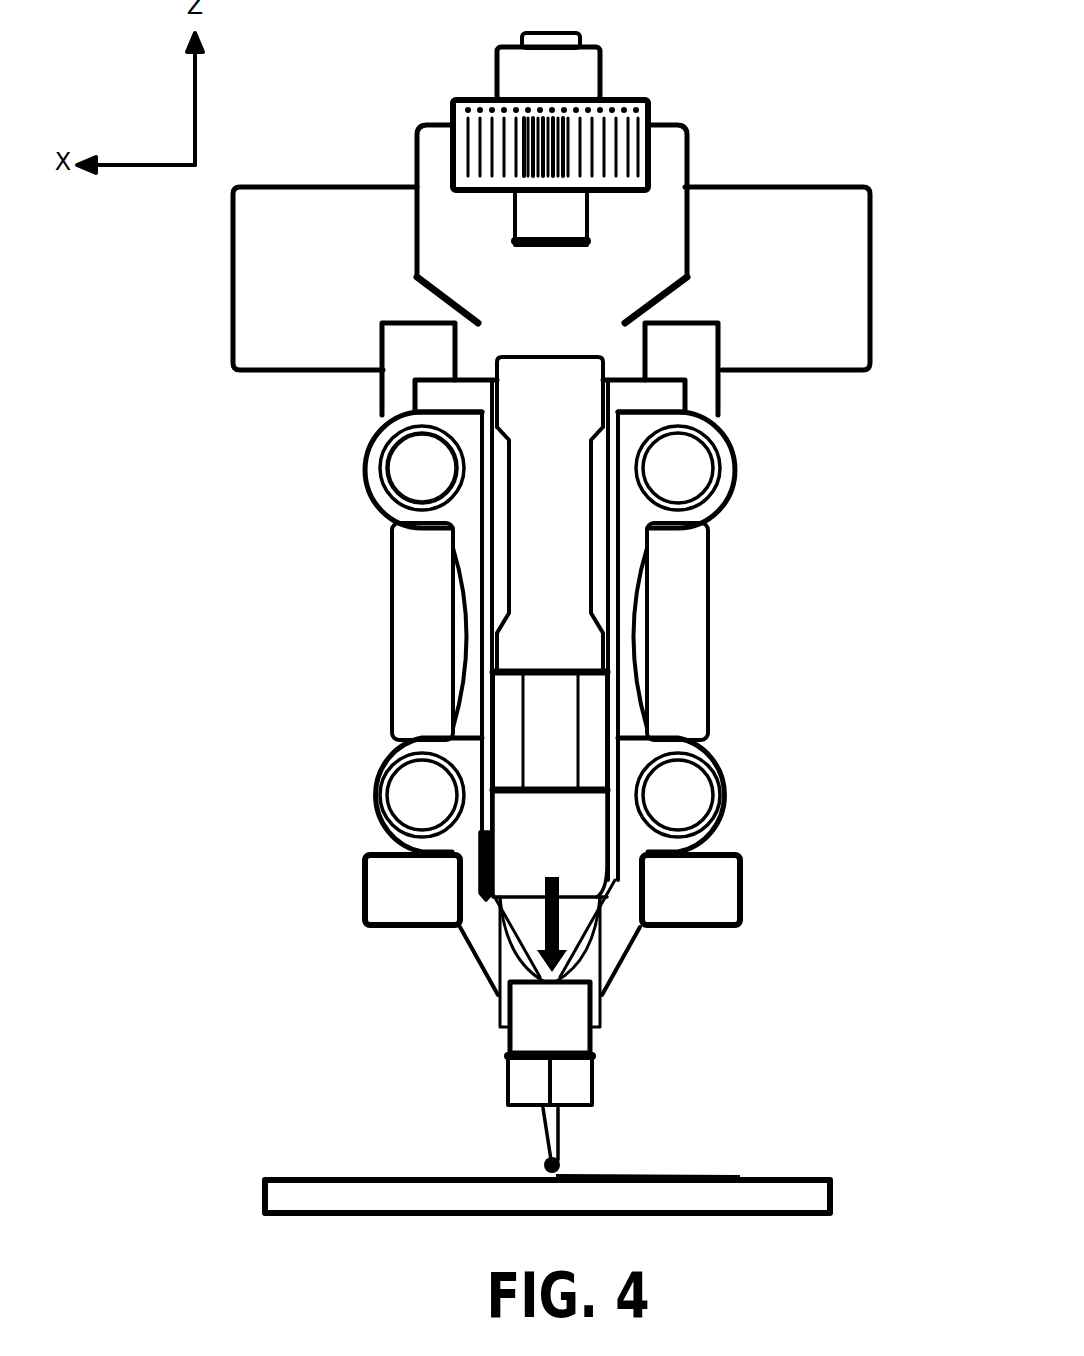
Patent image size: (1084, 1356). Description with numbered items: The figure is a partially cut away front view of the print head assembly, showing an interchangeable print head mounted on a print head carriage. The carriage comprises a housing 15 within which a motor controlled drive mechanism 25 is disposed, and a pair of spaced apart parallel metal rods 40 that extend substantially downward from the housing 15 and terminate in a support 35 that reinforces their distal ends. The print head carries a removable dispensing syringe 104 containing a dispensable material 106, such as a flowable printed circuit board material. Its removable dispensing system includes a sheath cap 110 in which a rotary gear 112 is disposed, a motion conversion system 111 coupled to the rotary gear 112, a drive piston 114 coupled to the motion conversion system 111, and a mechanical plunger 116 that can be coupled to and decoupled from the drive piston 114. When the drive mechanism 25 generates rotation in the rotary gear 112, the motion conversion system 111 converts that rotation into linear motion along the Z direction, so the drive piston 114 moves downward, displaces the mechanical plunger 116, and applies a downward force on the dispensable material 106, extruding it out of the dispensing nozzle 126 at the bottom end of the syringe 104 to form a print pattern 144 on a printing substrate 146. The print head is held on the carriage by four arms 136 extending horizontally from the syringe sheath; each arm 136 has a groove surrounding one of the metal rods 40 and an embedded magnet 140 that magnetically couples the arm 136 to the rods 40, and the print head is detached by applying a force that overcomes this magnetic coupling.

The housing 15 is at (810, 345).
The motor controlled drive mechanism 25 is at (572, 82).
The support 35 is at (692, 885).
The metal rods 40 is at (421, 615).
The dispensing syringe 104 is at (447, 403).
The dispensable material 106 is at (547, 943).
The sheath cap 110 is at (452, 200).
The motion conversion system 111 is at (555, 578).
The rotary gear 112 is at (453, 127).
The drive piston 114 is at (548, 720).
The mechanical plunger 116 is at (540, 841).
The dispensing nozzle 126 is at (550, 1115).
The arms 136 is at (368, 462).
The magnet 140 is at (415, 465).
The print pattern 144 is at (630, 1178).
The printing substrate 146 is at (775, 1195).